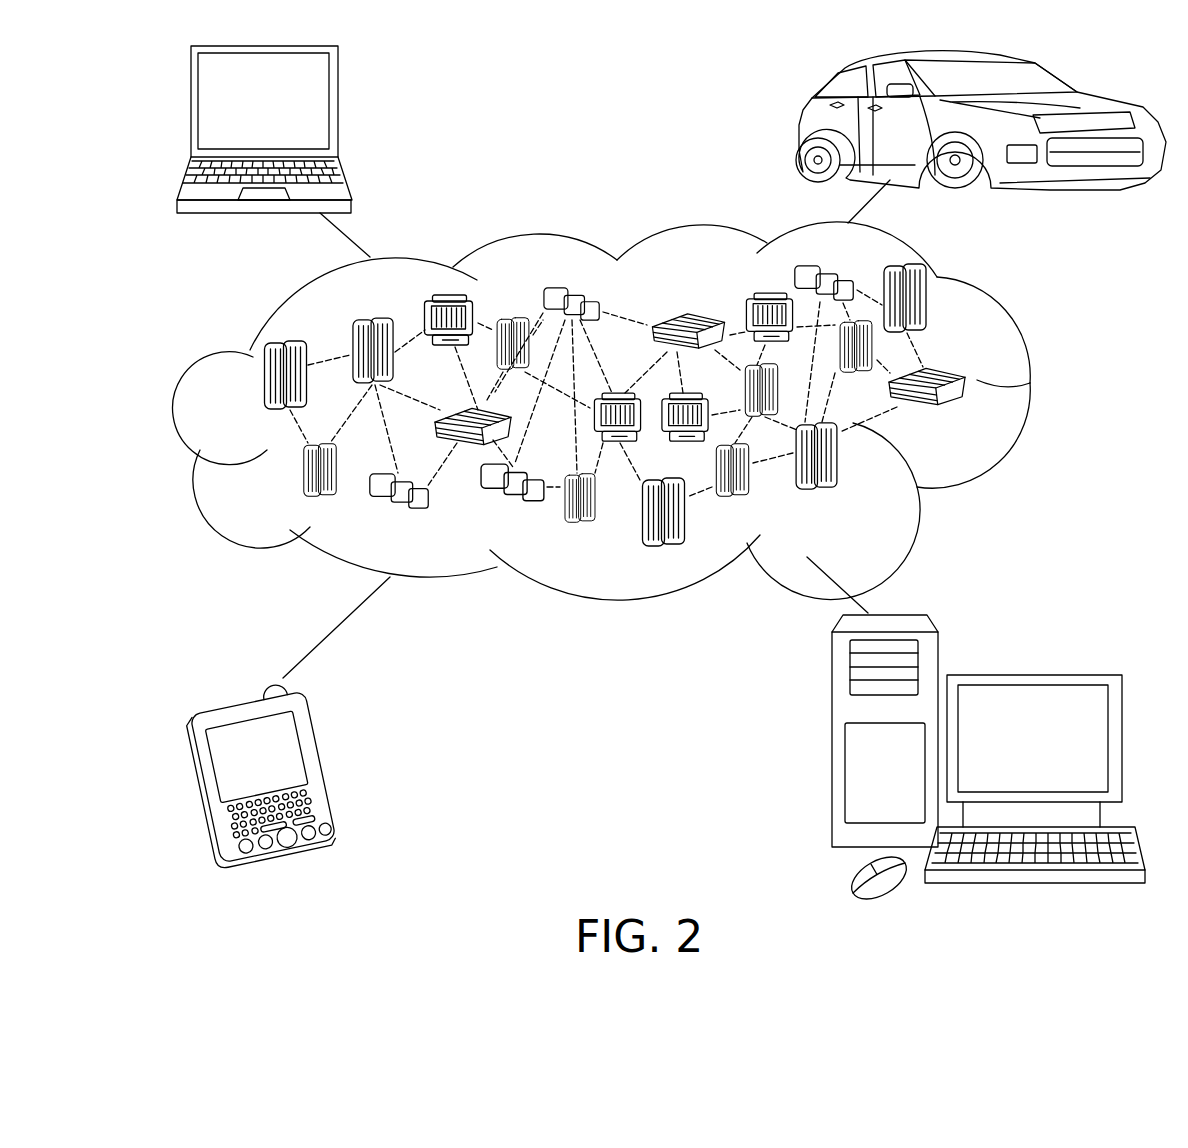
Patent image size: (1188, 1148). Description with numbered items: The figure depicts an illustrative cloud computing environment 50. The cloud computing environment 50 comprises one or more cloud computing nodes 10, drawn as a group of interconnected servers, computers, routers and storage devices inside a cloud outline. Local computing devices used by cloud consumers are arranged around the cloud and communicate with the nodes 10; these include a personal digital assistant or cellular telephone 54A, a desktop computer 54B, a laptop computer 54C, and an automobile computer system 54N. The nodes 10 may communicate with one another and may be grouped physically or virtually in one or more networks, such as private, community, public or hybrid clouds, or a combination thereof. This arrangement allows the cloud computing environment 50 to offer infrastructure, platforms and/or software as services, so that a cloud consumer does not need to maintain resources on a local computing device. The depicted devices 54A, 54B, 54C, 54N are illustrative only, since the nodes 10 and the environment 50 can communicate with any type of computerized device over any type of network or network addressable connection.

The cloud computing nodes 10 is at (970, 413).
The cloud computing environment 50 is at (1032, 382).
The personal digital assistant (PDA) or cellular telephone 54A is at (325, 768).
The desktop computer 54B is at (1030, 675).
The laptop computer 54C is at (335, 110).
The automobile computer system 54N is at (800, 128).